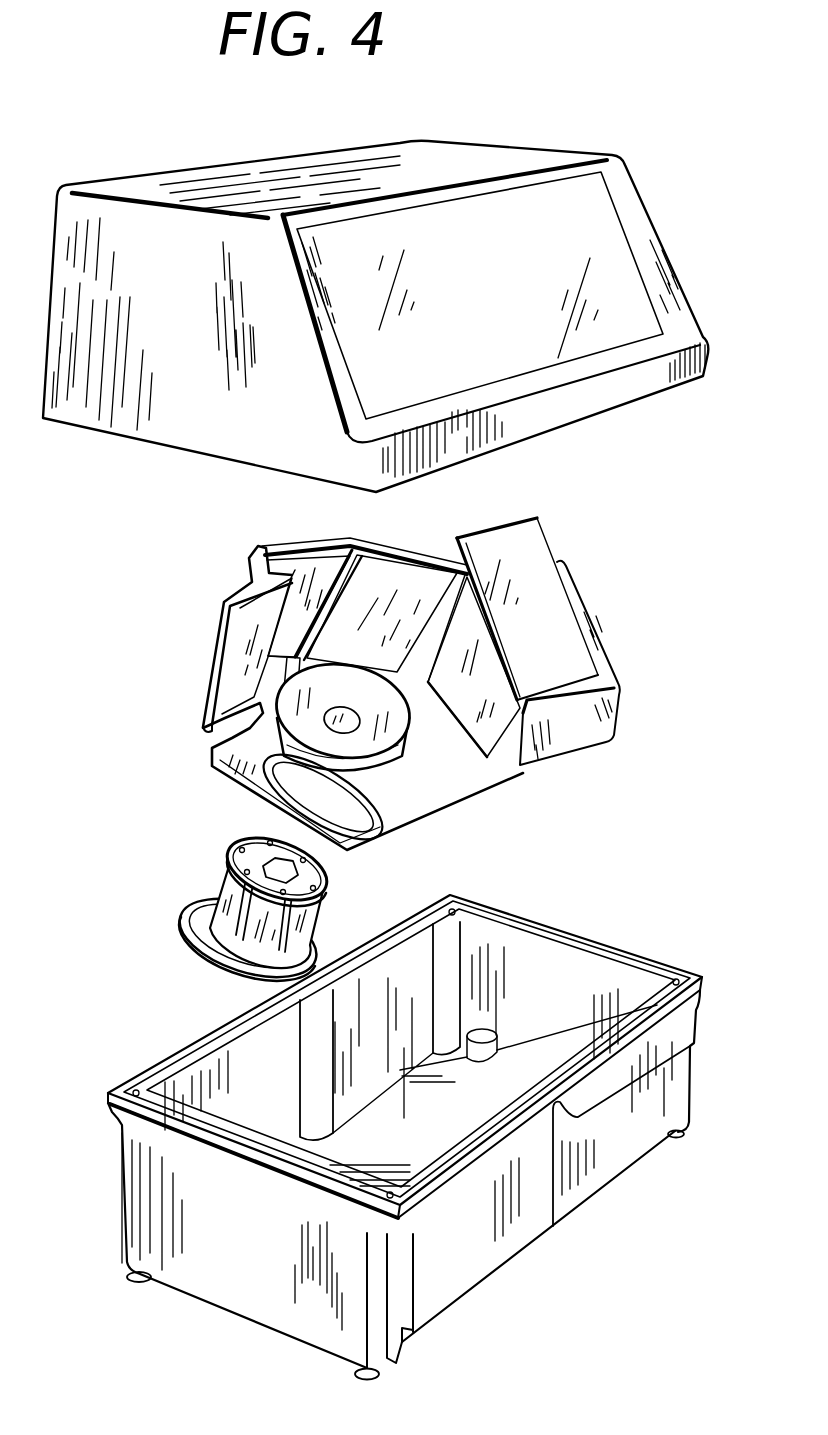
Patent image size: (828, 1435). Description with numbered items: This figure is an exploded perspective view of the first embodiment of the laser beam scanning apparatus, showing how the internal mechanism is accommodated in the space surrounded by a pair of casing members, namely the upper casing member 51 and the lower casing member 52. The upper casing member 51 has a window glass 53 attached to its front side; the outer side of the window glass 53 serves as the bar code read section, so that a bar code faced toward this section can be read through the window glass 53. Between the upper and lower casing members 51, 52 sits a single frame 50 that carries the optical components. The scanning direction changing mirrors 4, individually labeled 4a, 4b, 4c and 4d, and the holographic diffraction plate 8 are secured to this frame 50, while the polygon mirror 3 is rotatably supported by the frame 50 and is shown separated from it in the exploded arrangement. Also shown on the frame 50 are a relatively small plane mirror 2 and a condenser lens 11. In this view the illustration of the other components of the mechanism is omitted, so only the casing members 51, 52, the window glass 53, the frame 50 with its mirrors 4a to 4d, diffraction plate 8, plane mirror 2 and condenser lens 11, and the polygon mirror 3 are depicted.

The upper casing member 51 is at (613, 397).
The window glass 53 is at (533, 200).
The frame 50 is at (603, 727).
The holographic diffraction plate 8 is at (533, 542).
The scanning direction changing mirrors 4 is at (359, 662).
The scanning direction changing mirror 4a is at (247, 630).
The scanning direction changing mirror 4b is at (310, 567).
The scanning direction changing mirror 4c is at (387, 570).
The scanning direction changing mirror 4d is at (493, 727).
The plane mirror 2 is at (327, 715).
The condenser lens 11 is at (393, 747).
The polygon mirror 3 is at (219, 869).
The lower casing member 52 is at (630, 947).